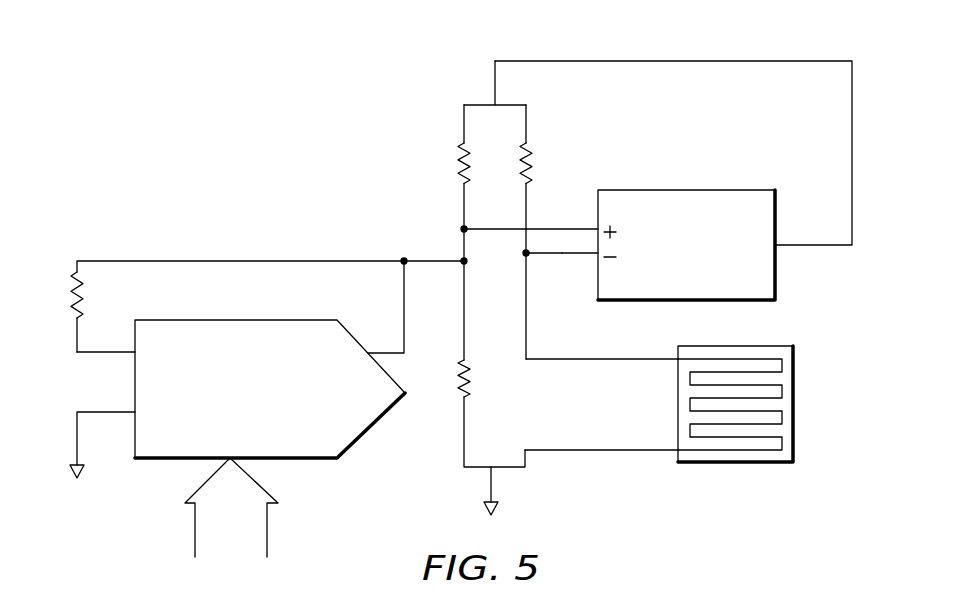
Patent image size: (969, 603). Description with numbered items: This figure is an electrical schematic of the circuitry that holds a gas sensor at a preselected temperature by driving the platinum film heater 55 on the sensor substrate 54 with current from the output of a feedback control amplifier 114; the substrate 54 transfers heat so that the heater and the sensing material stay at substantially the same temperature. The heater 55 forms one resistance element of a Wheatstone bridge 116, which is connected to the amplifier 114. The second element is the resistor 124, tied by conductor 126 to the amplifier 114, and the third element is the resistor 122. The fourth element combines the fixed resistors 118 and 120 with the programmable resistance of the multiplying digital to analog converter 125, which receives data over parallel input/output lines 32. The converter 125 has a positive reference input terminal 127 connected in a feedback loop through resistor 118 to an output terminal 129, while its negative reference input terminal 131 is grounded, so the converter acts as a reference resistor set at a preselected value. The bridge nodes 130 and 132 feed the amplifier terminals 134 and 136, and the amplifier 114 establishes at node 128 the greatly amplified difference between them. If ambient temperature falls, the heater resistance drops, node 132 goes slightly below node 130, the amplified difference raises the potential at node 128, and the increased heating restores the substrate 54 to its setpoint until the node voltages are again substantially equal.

The parallel input/output lines 32 is at (195, 525).
The sensor substrate 54 is at (793, 380).
The film heater 55 is at (742, 450).
The feedback control amplifier 114 is at (775, 300).
The Wheatstone bridge 116 is at (433, 137).
The resistor 118 is at (72, 288).
The resistor 120 is at (462, 392).
The resistor 122 is at (458, 160).
The resistor 124 is at (527, 158).
The multiplying digital to analog converter 125 is at (327, 477).
The conductor 126 is at (713, 62).
The positive reference input terminal 127 is at (133, 353).
The node 128 is at (495, 103).
The output terminal 129 is at (368, 353).
The node 130 is at (464, 261).
The negative reference input terminal 131 is at (133, 414).
The node 132 is at (526, 255).
The terminal 134 is at (598, 229).
The terminal 136 is at (598, 253).